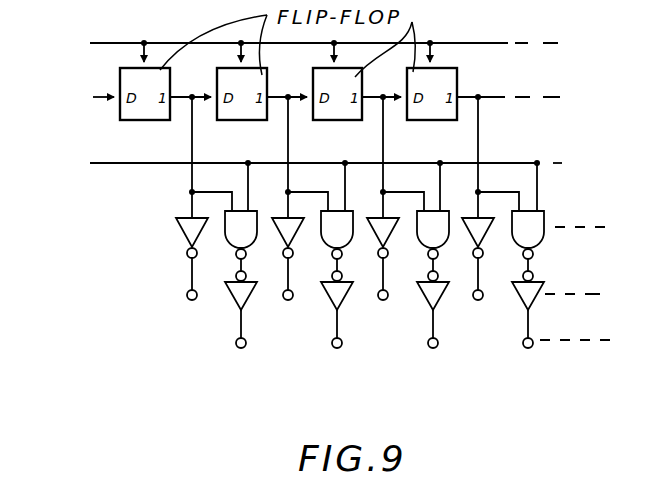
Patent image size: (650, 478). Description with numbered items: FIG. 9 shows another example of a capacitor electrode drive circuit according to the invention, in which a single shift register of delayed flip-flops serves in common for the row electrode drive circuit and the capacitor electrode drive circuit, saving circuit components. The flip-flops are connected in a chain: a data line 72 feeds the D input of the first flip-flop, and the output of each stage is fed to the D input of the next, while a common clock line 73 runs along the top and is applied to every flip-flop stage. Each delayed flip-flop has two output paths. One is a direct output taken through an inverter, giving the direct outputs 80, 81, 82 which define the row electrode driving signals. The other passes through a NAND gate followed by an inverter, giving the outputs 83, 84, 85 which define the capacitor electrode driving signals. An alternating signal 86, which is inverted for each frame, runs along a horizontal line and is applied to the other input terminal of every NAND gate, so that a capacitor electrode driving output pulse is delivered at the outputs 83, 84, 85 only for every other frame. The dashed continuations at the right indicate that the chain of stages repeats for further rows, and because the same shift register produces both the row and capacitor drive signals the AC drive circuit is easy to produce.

The data input line to flip-flop chain 72 is at (309, 96).
The clock line 73 is at (303, 48).
The alternating signal 86 is at (306, 165).
The direct output 80 is at (192, 215).
The direct output 81 is at (288, 213).
The direct output 82 is at (383, 212).
The output through gate 83 is at (223, 271).
The output through gate 84 is at (319, 271).
The output through gate 85 is at (414, 271).